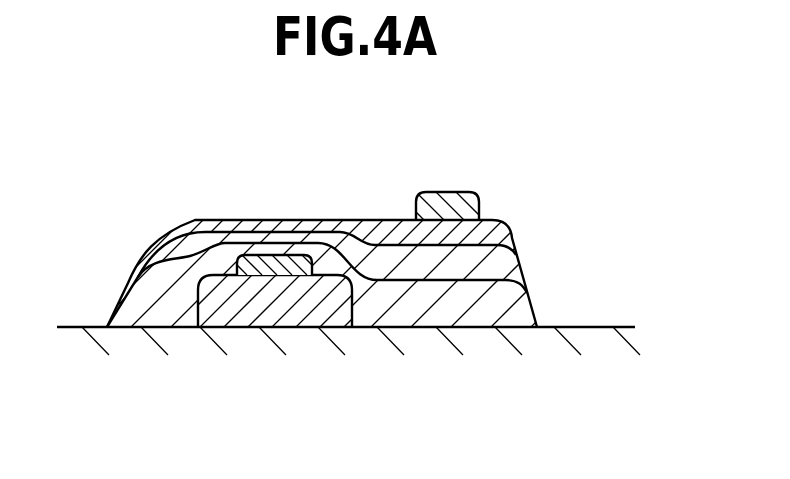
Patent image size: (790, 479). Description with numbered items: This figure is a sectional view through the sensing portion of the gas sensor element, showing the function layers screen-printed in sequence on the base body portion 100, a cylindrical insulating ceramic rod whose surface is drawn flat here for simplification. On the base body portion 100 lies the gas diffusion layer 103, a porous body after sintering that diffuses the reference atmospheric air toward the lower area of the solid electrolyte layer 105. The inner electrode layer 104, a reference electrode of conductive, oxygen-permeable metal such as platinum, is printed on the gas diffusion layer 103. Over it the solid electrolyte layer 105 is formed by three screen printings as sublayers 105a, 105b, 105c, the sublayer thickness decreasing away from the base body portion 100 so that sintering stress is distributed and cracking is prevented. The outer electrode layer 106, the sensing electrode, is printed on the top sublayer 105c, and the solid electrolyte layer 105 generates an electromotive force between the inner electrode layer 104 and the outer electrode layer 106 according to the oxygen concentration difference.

The base body portion 100 is at (98, 343).
The gas diffusion layer 103 is at (288, 312).
The inner electrode layer 104 is at (270, 260).
The solid electrolyte layer 105 is at (618, 204).
The first sublayer of solid electrolyte layer 105a is at (502, 309).
The second sublayer of solid electrolyte layer 105b is at (503, 268).
The third sublayer of solid electrolyte layer 105c is at (500, 240).
The outer electrode layer 106 is at (442, 210).